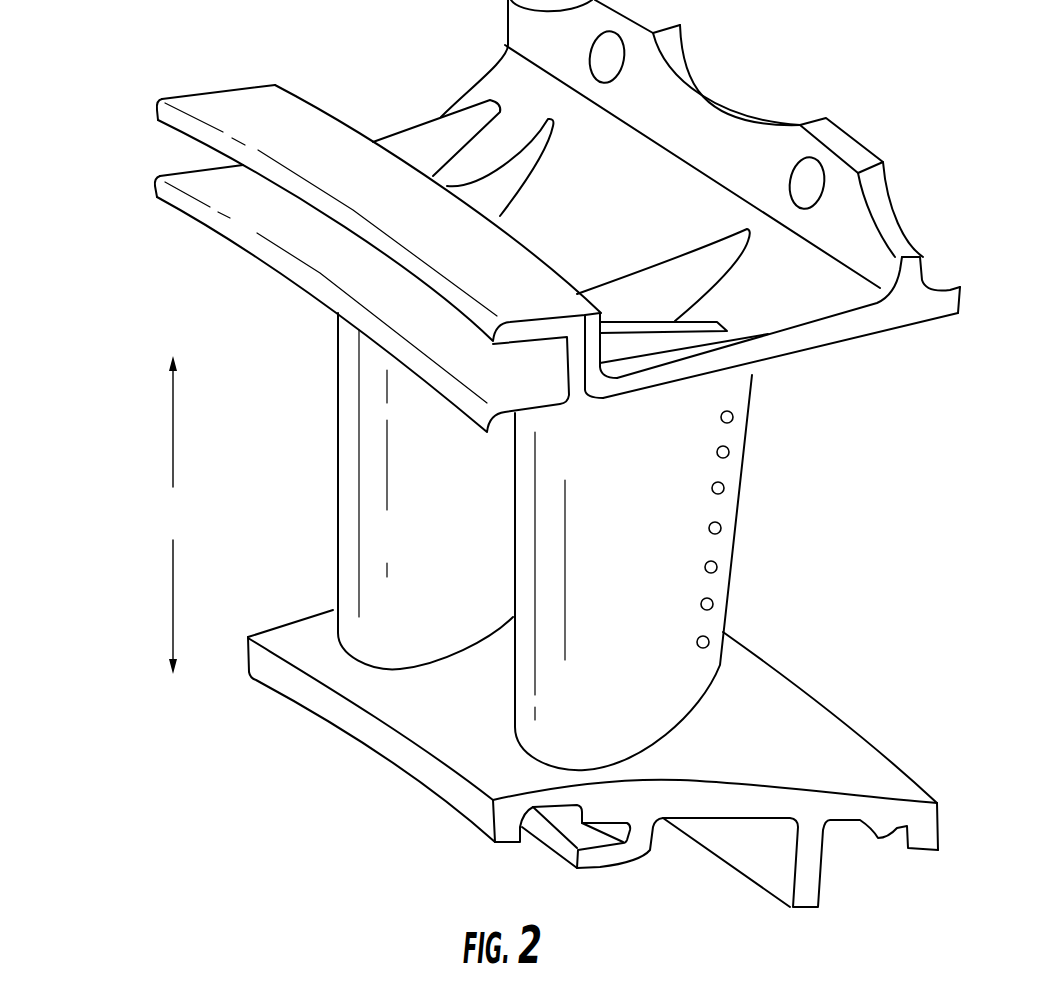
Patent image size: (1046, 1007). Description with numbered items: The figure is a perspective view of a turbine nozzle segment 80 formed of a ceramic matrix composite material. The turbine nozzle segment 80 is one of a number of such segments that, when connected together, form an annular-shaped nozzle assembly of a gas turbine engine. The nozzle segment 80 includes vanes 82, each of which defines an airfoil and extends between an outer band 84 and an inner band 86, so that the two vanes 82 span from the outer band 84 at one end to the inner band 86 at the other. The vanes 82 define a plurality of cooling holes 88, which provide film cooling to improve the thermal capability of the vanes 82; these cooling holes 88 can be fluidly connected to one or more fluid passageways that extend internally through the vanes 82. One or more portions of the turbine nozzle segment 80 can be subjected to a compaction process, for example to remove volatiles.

The turbine nozzle segment 80 is at (105, 136).
The vanes 82 is at (523, 642).
The outer band 84 is at (887, 327).
The inner band 86 is at (843, 750).
The cooling holes 88 is at (735, 567).